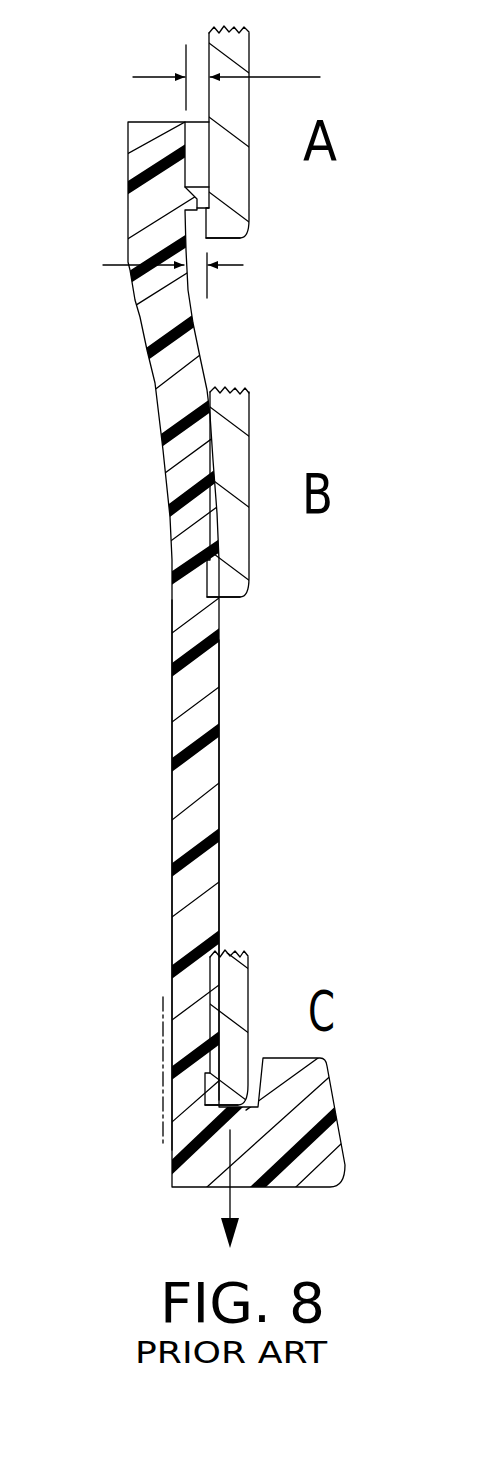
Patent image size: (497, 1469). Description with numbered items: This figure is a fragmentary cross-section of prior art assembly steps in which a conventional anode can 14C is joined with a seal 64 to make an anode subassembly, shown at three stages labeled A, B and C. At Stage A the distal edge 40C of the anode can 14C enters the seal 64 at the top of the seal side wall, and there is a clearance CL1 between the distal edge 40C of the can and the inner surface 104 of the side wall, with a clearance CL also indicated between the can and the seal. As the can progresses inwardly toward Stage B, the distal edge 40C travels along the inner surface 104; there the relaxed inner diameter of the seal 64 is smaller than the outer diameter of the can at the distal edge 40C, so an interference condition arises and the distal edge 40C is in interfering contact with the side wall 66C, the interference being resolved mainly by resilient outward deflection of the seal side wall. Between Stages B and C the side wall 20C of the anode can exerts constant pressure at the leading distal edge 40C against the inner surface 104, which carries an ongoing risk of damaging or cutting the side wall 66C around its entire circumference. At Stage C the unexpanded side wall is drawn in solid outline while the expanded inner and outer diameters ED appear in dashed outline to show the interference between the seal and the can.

The conventional anode can 14C is at (256, 49).
The side wall of the anode can 20C is at (256, 430).
The seal 64 is at (126, 174).
The side wall of the seal 66C is at (169, 808).
The inner surface of the side wall 104 is at (221, 742).
The distal edge of the anode can 40C is at (222, 239).
The clearance CL is at (248, 77).
The clearance CL1 is at (142, 275).
The expanded inner and outer diameters ED is at (159, 1078).